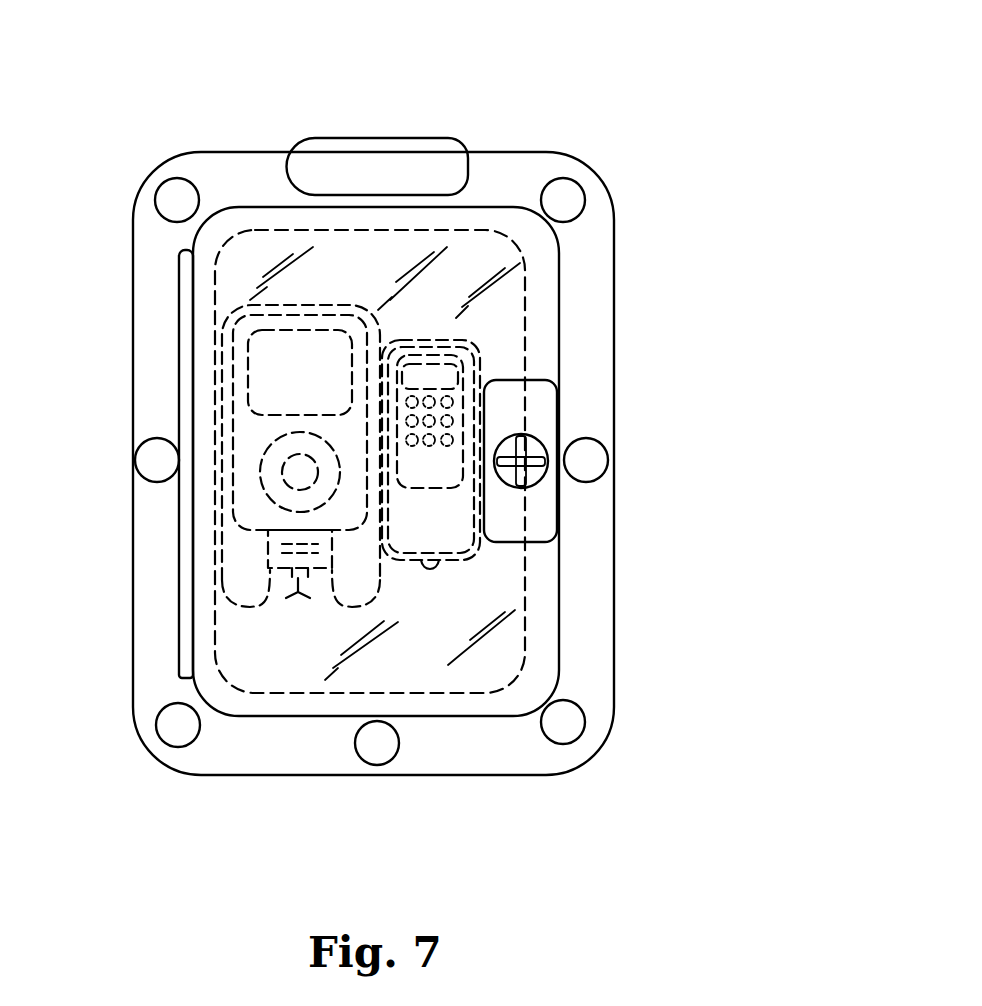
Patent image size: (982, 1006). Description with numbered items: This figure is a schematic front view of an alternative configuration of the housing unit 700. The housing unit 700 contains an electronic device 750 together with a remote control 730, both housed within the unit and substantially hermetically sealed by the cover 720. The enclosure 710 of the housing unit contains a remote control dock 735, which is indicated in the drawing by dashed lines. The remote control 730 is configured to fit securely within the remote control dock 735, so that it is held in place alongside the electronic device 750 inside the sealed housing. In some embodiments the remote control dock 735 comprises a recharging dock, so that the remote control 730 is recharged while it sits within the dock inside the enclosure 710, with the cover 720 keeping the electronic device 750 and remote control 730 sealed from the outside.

The housing unit 700 is at (744, 127).
The enclosure 710 is at (210, 278).
The cover 720 is at (240, 207).
The remote control 730 is at (430, 340).
The remote control dock 735 is at (428, 572).
The electronic device 750 is at (320, 306).